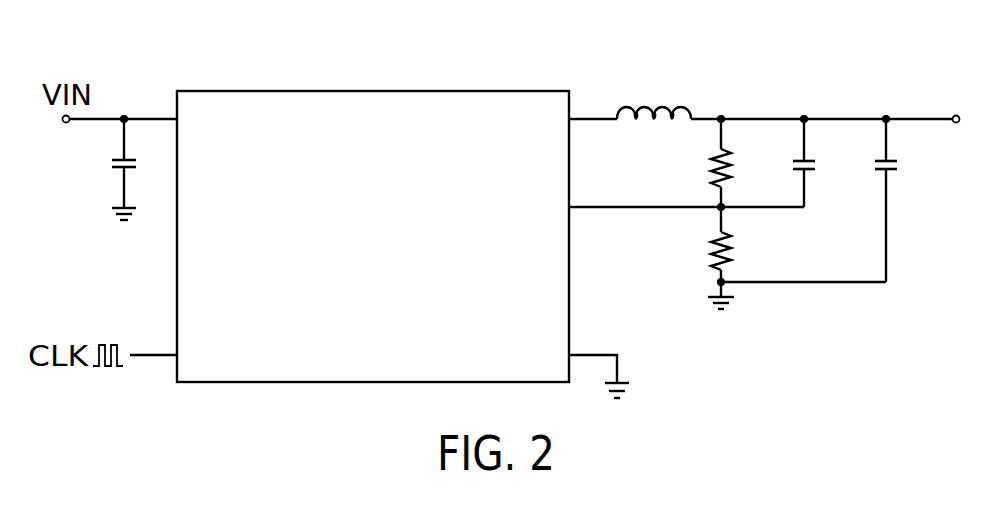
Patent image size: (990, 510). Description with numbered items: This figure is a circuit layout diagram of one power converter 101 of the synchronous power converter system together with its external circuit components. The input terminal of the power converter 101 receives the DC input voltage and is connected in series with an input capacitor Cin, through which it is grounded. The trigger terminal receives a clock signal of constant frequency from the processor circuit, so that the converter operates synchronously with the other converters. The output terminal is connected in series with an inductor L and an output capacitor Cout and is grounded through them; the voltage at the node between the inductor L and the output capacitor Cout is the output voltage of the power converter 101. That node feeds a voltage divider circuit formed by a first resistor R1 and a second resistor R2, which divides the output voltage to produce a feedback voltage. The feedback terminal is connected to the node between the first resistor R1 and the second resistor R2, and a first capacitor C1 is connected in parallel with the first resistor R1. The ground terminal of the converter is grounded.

The power converter 101 is at (374, 91).
The input capacitor Cin is at (101, 169).
The inductor L is at (654, 94).
The first resistor R1 is at (740, 163).
The second resistor R2 is at (739, 258).
The first capacitor C1 is at (822, 163).
The output capacitor Cout is at (841, 200).